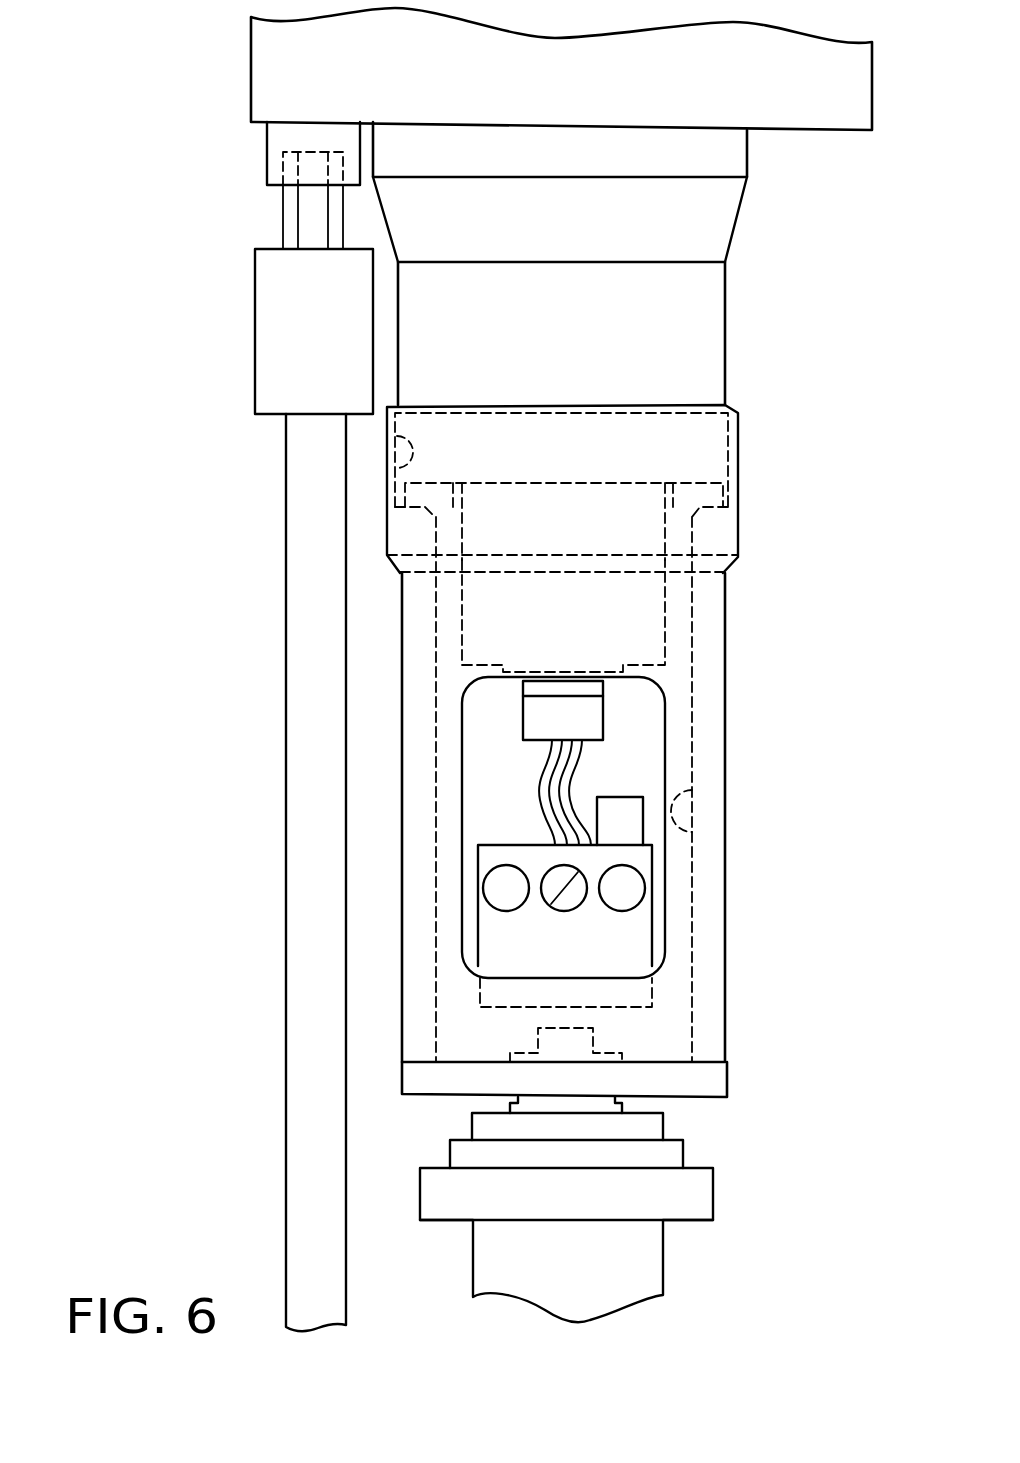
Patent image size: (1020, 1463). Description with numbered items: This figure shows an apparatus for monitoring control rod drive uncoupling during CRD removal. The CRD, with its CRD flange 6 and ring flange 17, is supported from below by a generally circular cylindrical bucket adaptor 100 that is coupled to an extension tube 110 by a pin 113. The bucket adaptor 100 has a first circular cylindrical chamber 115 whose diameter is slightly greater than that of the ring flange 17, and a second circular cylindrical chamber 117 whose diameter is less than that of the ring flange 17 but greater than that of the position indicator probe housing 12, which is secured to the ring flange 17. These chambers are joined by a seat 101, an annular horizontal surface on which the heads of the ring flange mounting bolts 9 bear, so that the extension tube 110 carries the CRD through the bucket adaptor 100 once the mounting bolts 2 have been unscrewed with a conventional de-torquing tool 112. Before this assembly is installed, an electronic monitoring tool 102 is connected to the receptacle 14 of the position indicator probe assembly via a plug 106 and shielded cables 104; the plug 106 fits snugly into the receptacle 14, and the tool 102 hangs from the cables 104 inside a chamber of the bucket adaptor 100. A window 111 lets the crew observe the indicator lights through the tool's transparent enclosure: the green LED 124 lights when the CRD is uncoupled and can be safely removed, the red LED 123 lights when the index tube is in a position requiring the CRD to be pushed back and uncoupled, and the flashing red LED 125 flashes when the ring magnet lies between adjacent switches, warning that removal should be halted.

The mounting bolts 2 is at (266, 164).
The CRD flange 6 is at (725, 347).
The ring flange mounting bolts 9 is at (453, 518).
The housing 12 is at (668, 612).
The receptacle 14 is at (593, 690).
The ring flange 17 is at (688, 450).
The bucket adaptor 100 is at (727, 656).
The seat 101 is at (737, 478).
The electronic monitoring tool 102 is at (532, 843).
The shielded cables 104 is at (578, 776).
The plug 106 is at (604, 734).
The extension tube 110 is at (716, 1172).
The window 111 is at (460, 745).
The de-torquing tool 112 is at (286, 622).
The pin 113 is at (580, 1046).
The first circular cylindrical chamber 115 is at (398, 473).
The second circular cylindrical chamber 117 is at (694, 836).
The red LED 123 is at (633, 912).
The green LED 124 is at (494, 910).
The flashing red LED 125 is at (564, 912).